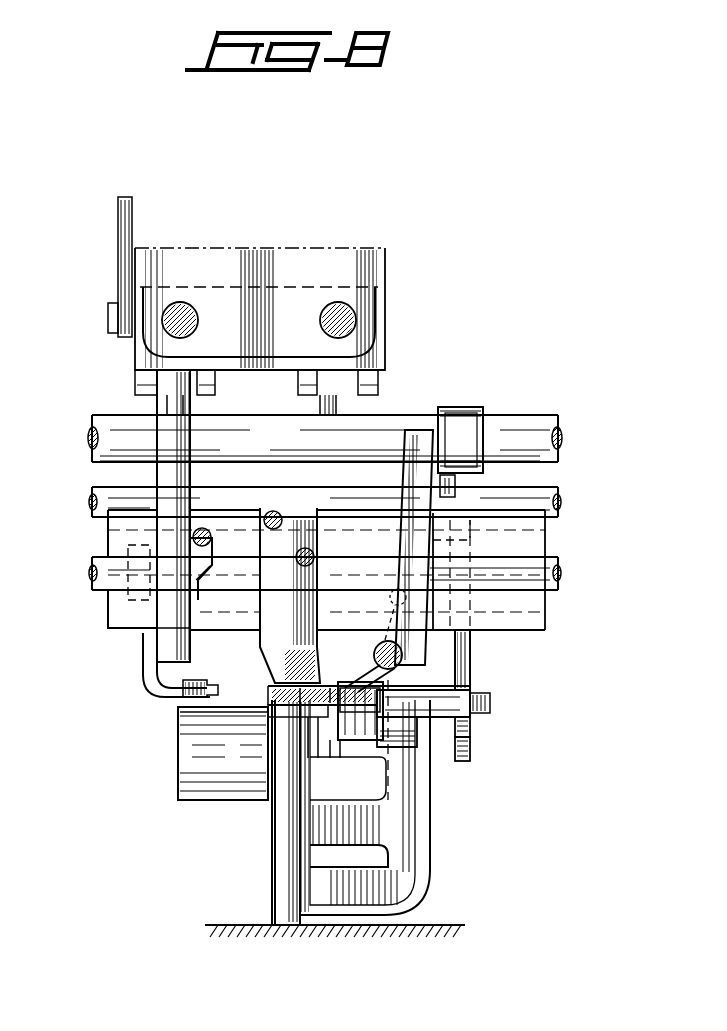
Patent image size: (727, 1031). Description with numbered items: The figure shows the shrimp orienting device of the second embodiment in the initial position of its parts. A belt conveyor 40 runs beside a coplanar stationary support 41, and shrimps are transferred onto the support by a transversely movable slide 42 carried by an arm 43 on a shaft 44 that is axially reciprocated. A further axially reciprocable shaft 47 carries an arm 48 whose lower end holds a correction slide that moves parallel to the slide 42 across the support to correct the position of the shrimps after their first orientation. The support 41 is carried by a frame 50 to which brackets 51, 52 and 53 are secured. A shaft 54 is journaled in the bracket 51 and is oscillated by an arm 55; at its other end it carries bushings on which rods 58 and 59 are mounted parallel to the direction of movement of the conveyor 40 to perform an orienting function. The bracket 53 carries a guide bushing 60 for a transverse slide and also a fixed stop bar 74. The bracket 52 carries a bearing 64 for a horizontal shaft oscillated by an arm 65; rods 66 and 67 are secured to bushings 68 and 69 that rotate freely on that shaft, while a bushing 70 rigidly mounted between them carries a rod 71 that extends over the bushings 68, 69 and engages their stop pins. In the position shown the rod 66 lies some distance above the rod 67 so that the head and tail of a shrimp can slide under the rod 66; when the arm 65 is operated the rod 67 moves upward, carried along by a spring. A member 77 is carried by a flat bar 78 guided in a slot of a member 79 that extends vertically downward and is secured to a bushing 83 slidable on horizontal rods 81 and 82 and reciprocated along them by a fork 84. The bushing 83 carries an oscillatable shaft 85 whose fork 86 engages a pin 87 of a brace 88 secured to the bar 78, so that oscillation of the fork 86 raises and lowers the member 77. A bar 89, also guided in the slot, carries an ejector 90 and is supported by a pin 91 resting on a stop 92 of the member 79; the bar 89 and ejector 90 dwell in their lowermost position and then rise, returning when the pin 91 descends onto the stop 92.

The belt conveyor 40 is at (180, 712).
The stationary support 41 is at (262, 714).
The transversely movable slide 42 is at (210, 693).
The arm 43 is at (150, 655).
The shaft 44 is at (105, 575).
The axially reciprocable shaft 47 is at (103, 497).
The arm 48 is at (470, 663).
The frame 50 is at (285, 860).
The bracket 51 is at (268, 798).
The bracket 52 is at (340, 830).
The bracket 53 is at (335, 893).
The shaft 54 is at (402, 656).
The arm 55 is at (395, 593).
The rod 58 is at (375, 655).
The rod 59 is at (385, 640).
The guide bushing 60 is at (445, 684).
The bearing 64 is at (470, 715).
The arm 65 is at (470, 746).
The rod 66 is at (312, 692).
The rod 67 is at (275, 696).
The bushing 68 is at (316, 748).
The bushing 69 is at (350, 748).
The bushing 70 is at (365, 741).
The rod 71 is at (348, 779).
The fixed stop bar 74 is at (345, 690).
The member 77 is at (272, 706).
The flat bar 78 is at (122, 612).
The member 79 is at (172, 622).
The horizontal rod 81 is at (178, 316).
The horizontal rod 82 is at (334, 316).
The bushing 83 is at (365, 352).
The fork 84 is at (132, 212).
The oscillatable shaft 85 is at (103, 432).
The fork 86 is at (455, 468).
The pin 87 is at (441, 478).
The brace 88 is at (416, 470).
The bar 89 is at (122, 541).
The ejector 90 is at (275, 607).
The pin 91 is at (211, 539).
The stop 92 is at (213, 558).